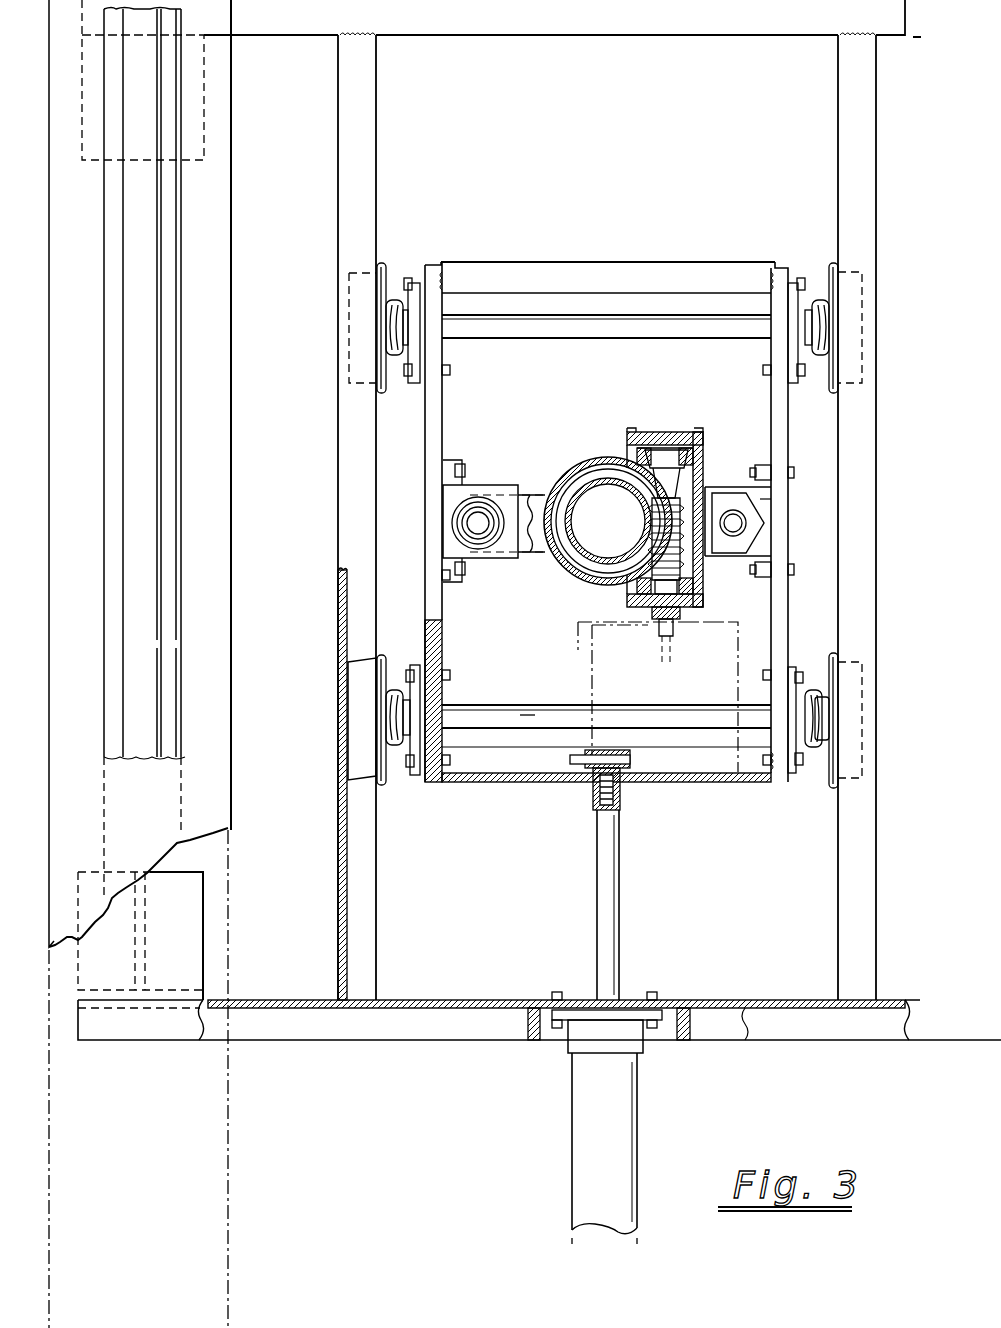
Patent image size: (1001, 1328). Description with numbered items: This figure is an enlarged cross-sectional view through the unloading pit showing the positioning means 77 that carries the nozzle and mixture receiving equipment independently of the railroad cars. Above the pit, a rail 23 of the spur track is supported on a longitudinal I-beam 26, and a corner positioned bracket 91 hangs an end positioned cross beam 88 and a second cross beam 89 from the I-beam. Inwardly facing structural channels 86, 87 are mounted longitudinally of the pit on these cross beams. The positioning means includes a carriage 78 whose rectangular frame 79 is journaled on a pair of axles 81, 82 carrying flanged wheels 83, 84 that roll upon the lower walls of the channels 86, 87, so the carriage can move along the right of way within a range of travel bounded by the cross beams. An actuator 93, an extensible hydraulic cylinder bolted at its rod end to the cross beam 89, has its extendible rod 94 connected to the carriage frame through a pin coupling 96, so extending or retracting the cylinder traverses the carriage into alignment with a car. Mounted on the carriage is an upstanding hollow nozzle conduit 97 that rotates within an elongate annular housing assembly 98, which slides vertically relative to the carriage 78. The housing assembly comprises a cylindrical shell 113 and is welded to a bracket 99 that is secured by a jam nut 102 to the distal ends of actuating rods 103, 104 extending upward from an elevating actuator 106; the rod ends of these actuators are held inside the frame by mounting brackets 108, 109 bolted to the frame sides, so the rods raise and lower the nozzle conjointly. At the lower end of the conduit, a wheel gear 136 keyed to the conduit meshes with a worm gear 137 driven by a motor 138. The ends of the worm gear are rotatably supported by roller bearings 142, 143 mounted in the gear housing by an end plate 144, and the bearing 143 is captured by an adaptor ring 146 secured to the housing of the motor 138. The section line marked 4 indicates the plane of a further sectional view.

The section line 4- 4 is at (115, 712).
The rail 23 is at (147, 510).
The I-beam 26 is at (218, 297).
The positioning means 77 is at (307, 834).
The carriage 78 is at (503, 263).
The rectangular frame 79 is at (780, 297).
The axle 81 is at (597, 330).
The axle 82 is at (500, 723).
The flanged wheel 83 is at (375, 383).
The flanged wheel 84 is at (863, 267).
The structural channel 86 is at (338, 605).
The structural channel 87 is at (846, 888).
The cross beam 88 is at (573, 25).
The cross beam 89 is at (766, 1035).
The bracket 91 is at (204, 137).
The actuator 93 is at (618, 1137).
The extendible rod 94 is at (612, 897).
The pin coupling 96 is at (641, 758).
The nozzle conduit 97 is at (585, 534).
The housing assembly 98 is at (566, 578).
The bracket 99 is at (540, 550).
The jam nut 102 is at (738, 521).
The actuating rod 103 is at (478, 528).
The actuating rod 104 is at (733, 530).
The actuator 106 is at (494, 492).
The mounting bracket 108 is at (521, 505).
The mounting bracket 109 is at (778, 499).
The cylindrical shell 113 is at (586, 578).
The wheel gear 136 is at (652, 480).
The worm gear 137 is at (695, 452).
The motor 138 is at (582, 670).
The roller bearing 142 is at (640, 460).
The roller bearing 143 is at (626, 600).
The end plate 144 is at (651, 446).
The adaptor ring 146 is at (690, 622).